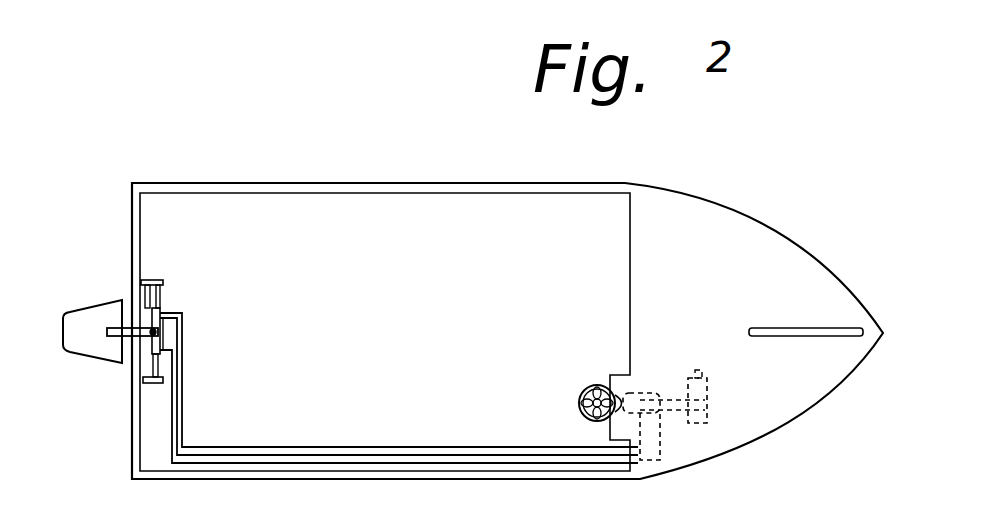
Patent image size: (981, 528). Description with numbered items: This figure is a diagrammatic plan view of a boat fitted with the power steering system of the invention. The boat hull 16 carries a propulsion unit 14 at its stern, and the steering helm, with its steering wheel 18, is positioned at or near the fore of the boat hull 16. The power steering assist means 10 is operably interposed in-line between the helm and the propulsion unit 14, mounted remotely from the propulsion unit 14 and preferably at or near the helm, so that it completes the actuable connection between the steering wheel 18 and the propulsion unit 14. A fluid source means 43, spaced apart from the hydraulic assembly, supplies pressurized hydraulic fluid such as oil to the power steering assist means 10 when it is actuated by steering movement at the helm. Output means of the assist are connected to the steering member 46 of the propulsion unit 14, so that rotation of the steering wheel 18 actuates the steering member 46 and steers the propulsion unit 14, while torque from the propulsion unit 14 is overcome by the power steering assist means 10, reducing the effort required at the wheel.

The power steering assist means 10 is at (653, 389).
The propulsion unit 14 is at (88, 300).
The boat hull 16 is at (775, 227).
The steering wheel 18 is at (592, 380).
The fluid source means 43 is at (708, 393).
The steering member 46 is at (172, 302).